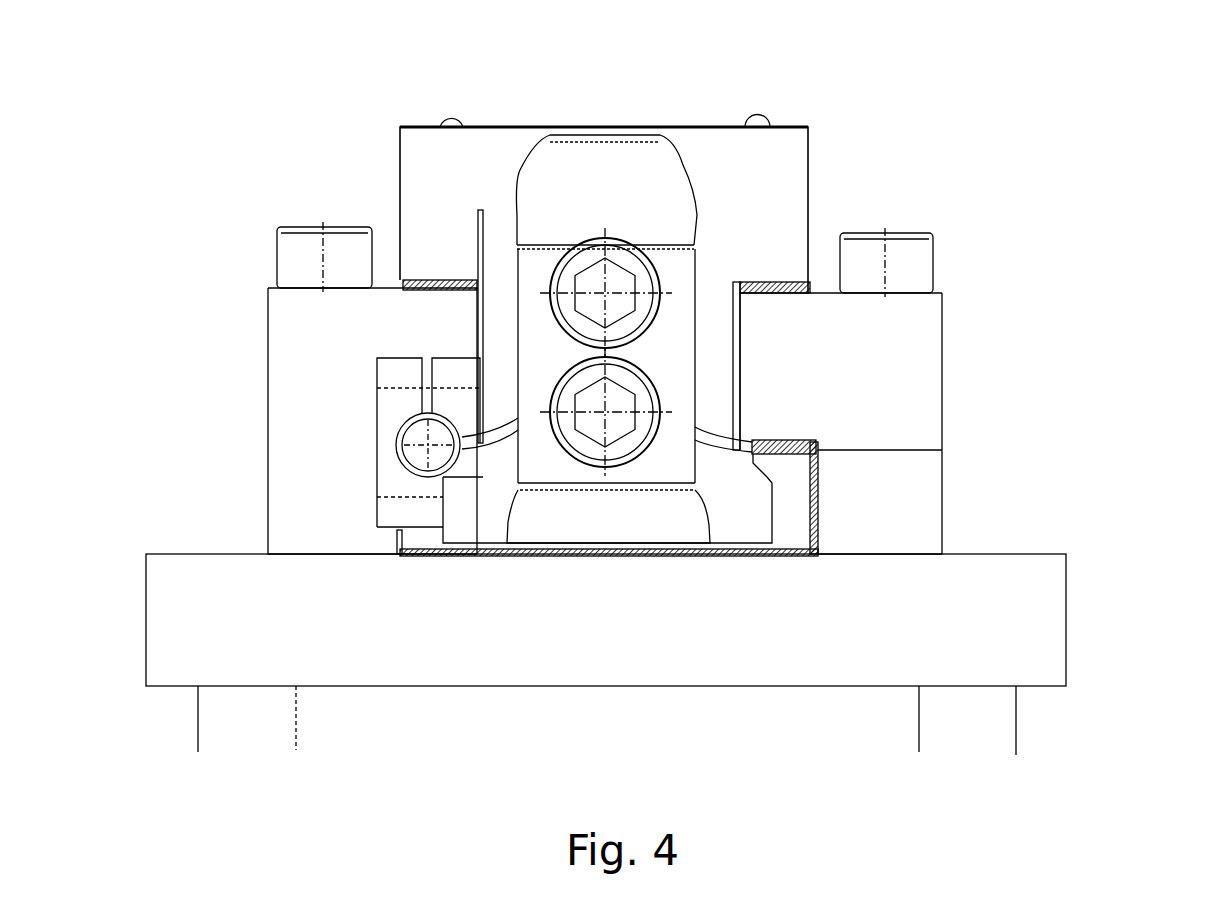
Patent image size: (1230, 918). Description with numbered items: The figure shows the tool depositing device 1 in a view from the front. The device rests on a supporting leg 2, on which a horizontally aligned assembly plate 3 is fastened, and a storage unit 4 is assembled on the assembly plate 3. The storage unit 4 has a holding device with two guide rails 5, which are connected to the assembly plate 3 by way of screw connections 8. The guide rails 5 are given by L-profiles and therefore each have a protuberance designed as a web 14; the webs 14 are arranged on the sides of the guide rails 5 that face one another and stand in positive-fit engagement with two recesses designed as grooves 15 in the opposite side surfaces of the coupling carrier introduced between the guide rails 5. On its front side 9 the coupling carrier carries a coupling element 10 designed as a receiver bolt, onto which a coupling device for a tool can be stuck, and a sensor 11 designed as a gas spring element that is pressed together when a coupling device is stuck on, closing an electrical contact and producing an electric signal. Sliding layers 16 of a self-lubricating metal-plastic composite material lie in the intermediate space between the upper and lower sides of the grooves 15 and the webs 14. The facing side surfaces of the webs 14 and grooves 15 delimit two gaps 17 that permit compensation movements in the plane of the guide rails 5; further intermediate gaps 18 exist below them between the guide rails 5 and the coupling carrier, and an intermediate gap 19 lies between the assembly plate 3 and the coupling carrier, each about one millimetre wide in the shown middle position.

The tool depositing device 1 is at (775, 161).
The supporting leg 2 is at (198, 730).
The assembly plate 3 is at (167, 622).
The storage unit 4 is at (632, 387).
The guide rails 5 is at (290, 517).
The screw connections 8 is at (298, 262).
The front side 9 is at (422, 171).
The coupling element 10 is at (600, 187).
The sensor 11 is at (397, 445).
The protuberance 14 is at (460, 340).
The recesses 15 is at (477, 328).
The sliding layers 16 is at (405, 287).
The gaps 17 is at (478, 213).
The intermediate gaps 18 is at (400, 554).
The intermediate gap 19 is at (782, 556).